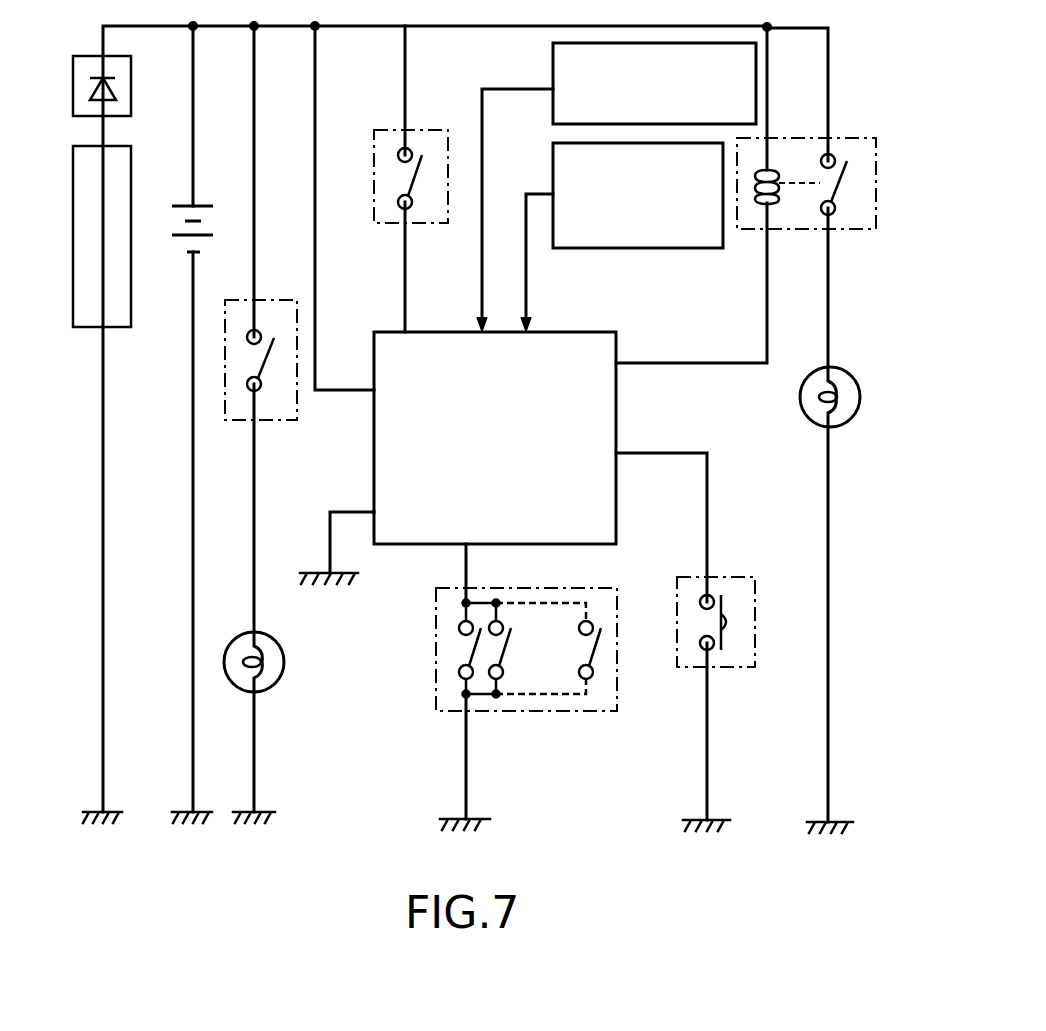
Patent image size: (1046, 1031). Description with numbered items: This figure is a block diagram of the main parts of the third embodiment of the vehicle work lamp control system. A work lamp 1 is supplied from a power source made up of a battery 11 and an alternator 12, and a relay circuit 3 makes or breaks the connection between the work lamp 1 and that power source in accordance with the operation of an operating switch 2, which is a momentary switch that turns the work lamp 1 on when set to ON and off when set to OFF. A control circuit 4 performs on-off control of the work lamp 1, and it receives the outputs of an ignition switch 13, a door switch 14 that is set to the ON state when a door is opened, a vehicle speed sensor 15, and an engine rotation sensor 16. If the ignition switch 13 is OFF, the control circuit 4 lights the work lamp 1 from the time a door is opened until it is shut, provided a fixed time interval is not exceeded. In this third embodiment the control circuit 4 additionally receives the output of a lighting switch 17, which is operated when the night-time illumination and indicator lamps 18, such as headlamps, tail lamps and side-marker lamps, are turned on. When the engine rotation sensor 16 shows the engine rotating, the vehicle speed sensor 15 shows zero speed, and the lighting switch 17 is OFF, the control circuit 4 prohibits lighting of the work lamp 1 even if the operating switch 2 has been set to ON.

The work lamp 1 is at (860, 388).
The operating switch 2 is at (757, 580).
The relay circuit 3 is at (866, 138).
The control circuit 4 is at (566, 332).
The battery 11 is at (199, 204).
The alternator 12 is at (133, 152).
The ignition switch 13 is at (383, 130).
The door switch 14 is at (578, 711).
The vehicle speed sensor 15 is at (548, 62).
The engine rotation sensor 16 is at (548, 160).
The lighting switch 17 is at (225, 420).
The indicator lamps 18 is at (278, 645).